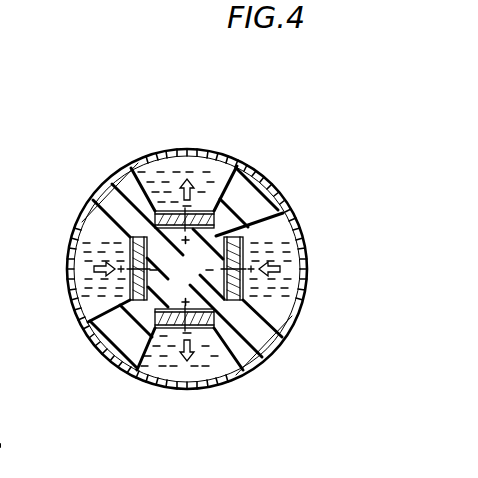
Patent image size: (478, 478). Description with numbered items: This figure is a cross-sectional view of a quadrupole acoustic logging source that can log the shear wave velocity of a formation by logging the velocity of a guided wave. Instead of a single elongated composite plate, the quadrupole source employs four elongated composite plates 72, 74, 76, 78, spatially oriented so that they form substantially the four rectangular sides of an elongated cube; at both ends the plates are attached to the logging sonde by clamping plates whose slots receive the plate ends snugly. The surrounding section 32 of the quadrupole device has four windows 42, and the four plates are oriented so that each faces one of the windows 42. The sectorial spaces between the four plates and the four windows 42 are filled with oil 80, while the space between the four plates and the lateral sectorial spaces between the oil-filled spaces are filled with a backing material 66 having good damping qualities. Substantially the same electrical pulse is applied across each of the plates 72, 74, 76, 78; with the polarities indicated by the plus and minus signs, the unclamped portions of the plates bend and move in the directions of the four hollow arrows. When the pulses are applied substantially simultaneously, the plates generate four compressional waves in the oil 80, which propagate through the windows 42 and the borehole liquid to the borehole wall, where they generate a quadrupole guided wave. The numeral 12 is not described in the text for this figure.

The fluid inlet chamber 12 is at (122, 253).
The section 32 is at (322, 141).
The windows 42 is at (176, 149).
The backing material 66 is at (192, 285).
The elongated composite plate 72 is at (205, 207).
The elongated composite plate 74 is at (130, 292).
The elongated composite plate 76 is at (216, 372).
The elongated composite plate 78 is at (250, 287).
The oil 80 is at (155, 176).